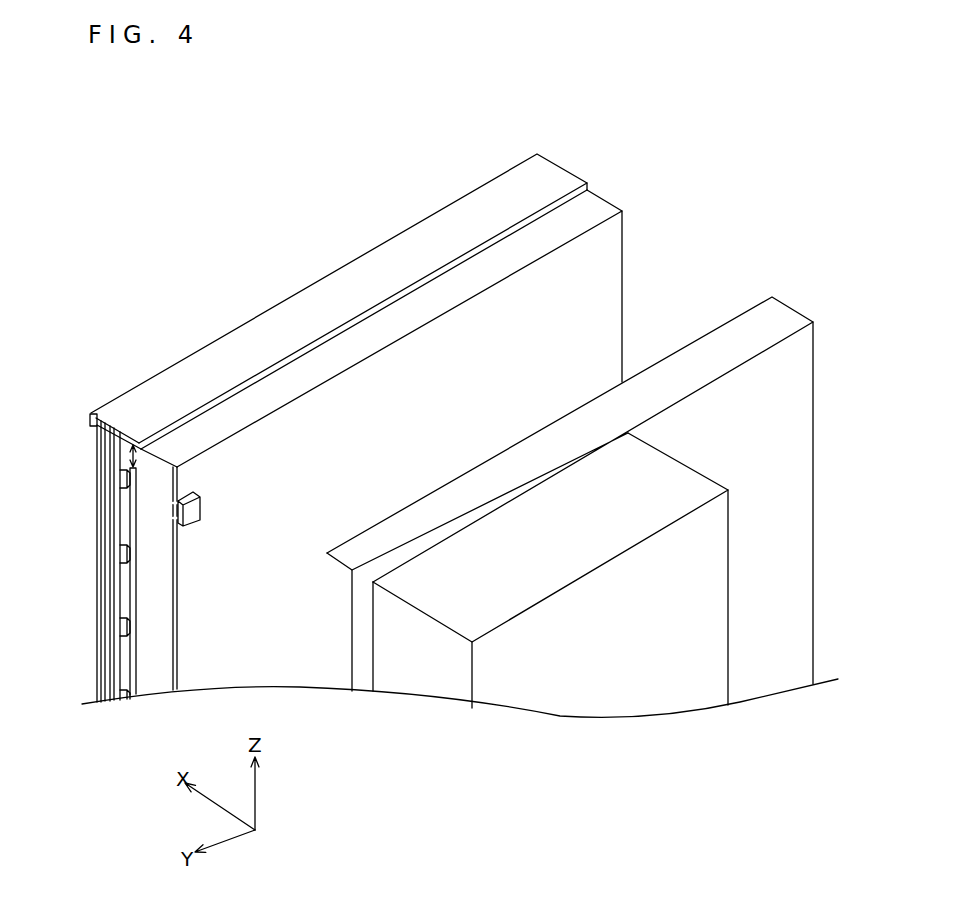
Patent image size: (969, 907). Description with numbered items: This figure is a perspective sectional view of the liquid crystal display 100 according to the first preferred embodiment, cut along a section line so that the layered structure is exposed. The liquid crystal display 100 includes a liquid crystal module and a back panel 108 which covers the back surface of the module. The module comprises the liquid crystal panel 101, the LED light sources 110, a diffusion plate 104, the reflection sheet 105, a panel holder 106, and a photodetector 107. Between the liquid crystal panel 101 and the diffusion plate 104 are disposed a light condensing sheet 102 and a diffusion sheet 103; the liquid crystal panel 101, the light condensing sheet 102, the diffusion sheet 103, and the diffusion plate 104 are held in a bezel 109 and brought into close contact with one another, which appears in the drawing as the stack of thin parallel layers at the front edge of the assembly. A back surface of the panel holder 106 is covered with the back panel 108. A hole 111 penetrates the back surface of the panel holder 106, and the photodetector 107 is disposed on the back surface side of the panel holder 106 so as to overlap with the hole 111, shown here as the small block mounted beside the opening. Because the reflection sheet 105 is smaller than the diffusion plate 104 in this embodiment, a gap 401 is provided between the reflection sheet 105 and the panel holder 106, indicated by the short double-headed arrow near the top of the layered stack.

The liquid crystal display 100 is at (137, 174).
The liquid crystal panel 101 is at (97, 448).
The light condensing sheet 102 is at (91, 412).
The diffusion sheet 103 is at (113, 426).
The diffusion plate 104 is at (120, 512).
The reflection sheet 105 is at (143, 597).
The panel holder 106 is at (610, 248).
The photodetector 107 is at (193, 525).
The back panel 108 is at (790, 303).
The bezel 109 is at (492, 200).
The LED light sources 110 is at (115, 558).
The hole 111 is at (161, 512).
The gap 401 is at (128, 458).